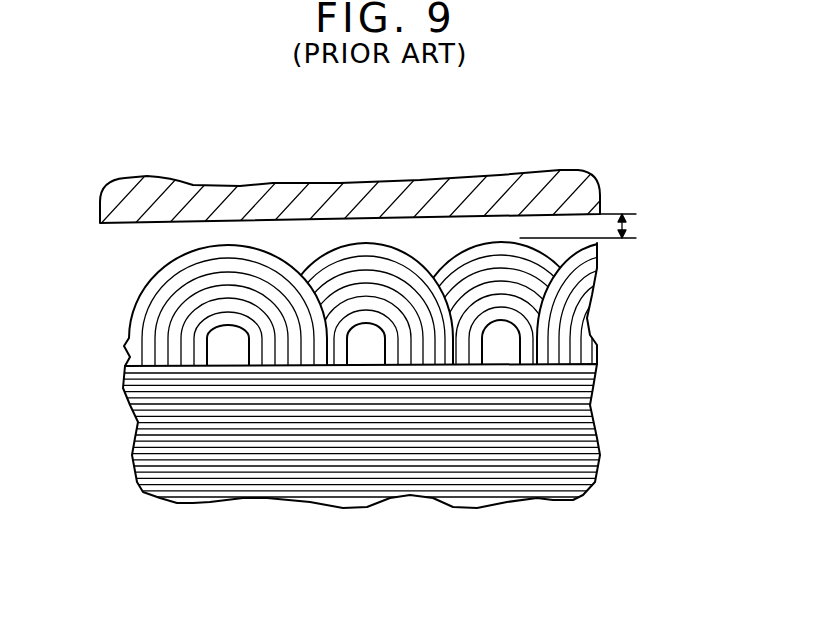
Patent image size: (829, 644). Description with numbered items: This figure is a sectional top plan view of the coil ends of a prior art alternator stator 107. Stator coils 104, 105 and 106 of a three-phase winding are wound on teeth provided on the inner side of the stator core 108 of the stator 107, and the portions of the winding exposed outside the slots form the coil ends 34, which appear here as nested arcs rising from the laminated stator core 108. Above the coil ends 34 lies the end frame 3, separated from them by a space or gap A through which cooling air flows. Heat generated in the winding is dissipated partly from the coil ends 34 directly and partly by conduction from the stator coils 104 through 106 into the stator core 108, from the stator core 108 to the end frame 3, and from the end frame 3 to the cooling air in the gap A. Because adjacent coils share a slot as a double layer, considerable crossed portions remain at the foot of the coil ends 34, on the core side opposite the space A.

The end frame 3 is at (573, 187).
The coil ends 34 is at (401, 218).
The stator coil 104 is at (230, 242).
The stator coil 105 is at (363, 242).
The stator coil 106 is at (491, 242).
The stator 107 is at (123, 222).
The stator core 108 is at (198, 488).
The gap A is at (596, 230).